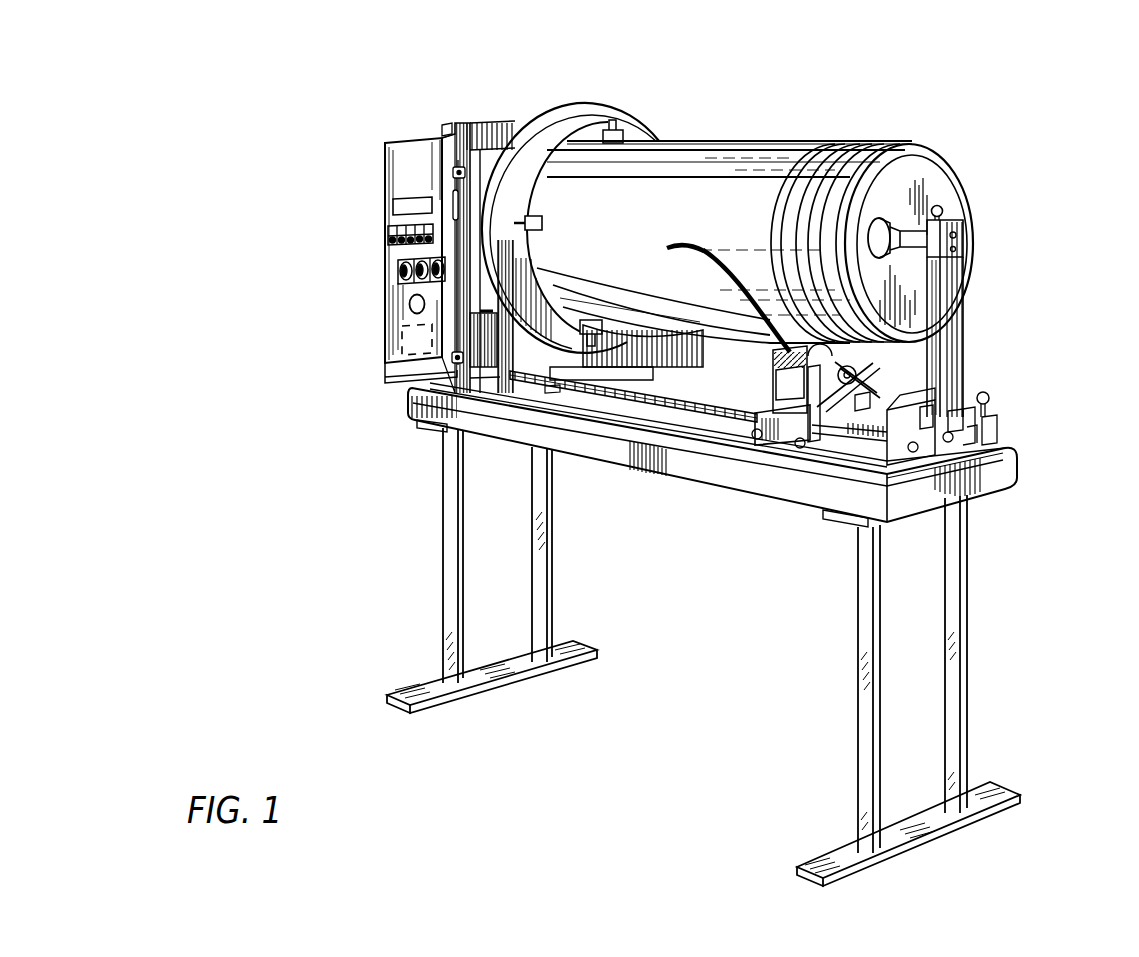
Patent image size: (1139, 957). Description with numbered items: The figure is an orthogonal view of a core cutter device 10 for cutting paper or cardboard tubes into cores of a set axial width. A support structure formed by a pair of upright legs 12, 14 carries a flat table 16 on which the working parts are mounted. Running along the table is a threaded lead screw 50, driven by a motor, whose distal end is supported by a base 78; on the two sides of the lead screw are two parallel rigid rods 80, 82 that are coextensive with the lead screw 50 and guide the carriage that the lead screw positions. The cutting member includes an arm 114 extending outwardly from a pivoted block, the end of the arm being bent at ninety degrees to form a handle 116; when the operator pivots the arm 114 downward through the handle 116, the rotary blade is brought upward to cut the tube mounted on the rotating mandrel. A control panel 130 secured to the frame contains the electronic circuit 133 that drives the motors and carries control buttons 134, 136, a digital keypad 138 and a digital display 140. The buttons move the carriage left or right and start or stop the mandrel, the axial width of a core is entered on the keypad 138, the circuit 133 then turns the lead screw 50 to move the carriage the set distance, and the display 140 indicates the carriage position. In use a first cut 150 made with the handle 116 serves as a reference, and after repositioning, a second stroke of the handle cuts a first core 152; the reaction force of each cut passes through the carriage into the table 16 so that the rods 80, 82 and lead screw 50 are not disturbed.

The core cutter device 10 is at (693, 472).
The upright leg 12 is at (484, 570).
The upright leg 14 is at (905, 690).
The flat table 16 is at (712, 460).
The threaded lead screw 50 is at (633, 444).
The base 78 is at (991, 456).
The rigid rod 80 is at (874, 404).
The rigid rod 82 is at (843, 500).
The arm 114 is at (746, 277).
The handle 116 is at (674, 215).
The control panel 130 is at (403, 237).
The electronic circuit 133 is at (365, 324).
The control button 134 is at (364, 279).
The control button 136 is at (368, 246).
The digital keypad 138 is at (370, 209).
The digital display 140 is at (372, 170).
The first cut 150 is at (909, 203).
The first core 152 is at (800, 208).